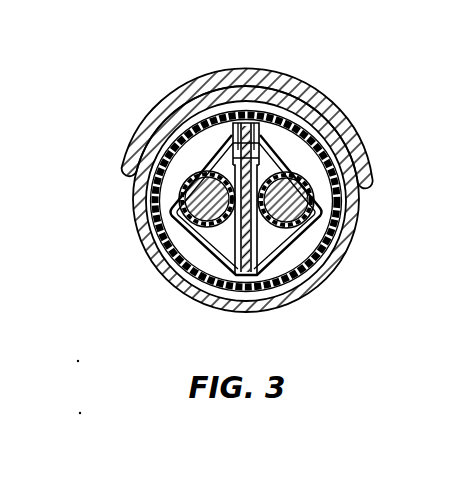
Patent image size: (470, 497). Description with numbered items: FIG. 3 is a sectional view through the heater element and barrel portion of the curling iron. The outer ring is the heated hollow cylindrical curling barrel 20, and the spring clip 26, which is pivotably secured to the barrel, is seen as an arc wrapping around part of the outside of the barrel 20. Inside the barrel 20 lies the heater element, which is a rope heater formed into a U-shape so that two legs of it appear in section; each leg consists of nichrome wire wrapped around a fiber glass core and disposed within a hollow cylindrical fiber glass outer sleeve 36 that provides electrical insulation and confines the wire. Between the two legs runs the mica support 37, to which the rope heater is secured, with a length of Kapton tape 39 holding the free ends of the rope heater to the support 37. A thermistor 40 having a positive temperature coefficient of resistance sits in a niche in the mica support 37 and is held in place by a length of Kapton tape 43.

The curling barrel 20 is at (352, 213).
The spring clip 26 is at (297, 85).
The outer sleeve 36 is at (328, 260).
The mica support 37 is at (253, 254).
The Kapton tape 39 is at (297, 157).
The thermistor 40 is at (247, 138).
The Kapton tape 43 is at (232, 240).